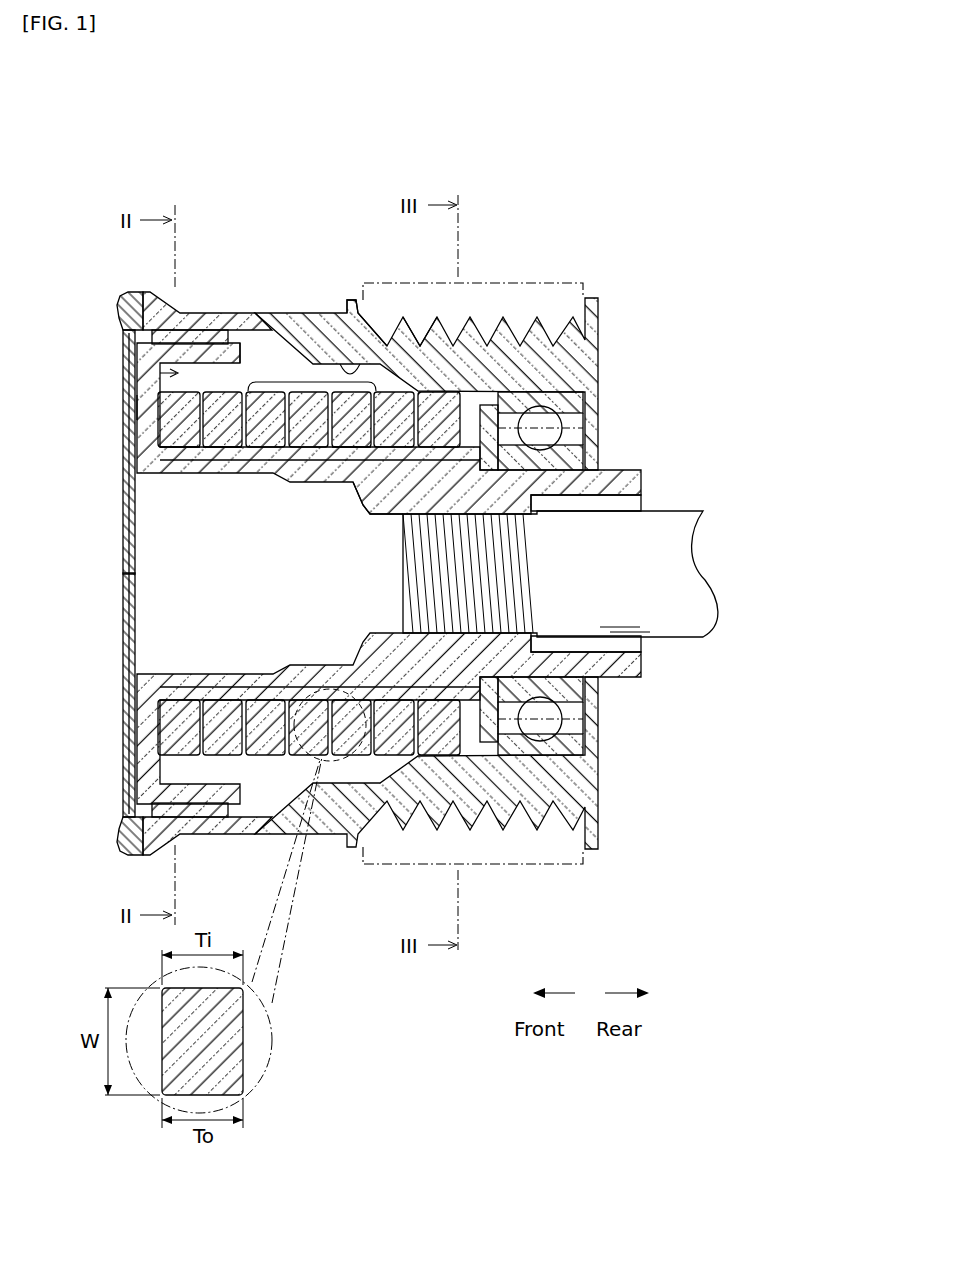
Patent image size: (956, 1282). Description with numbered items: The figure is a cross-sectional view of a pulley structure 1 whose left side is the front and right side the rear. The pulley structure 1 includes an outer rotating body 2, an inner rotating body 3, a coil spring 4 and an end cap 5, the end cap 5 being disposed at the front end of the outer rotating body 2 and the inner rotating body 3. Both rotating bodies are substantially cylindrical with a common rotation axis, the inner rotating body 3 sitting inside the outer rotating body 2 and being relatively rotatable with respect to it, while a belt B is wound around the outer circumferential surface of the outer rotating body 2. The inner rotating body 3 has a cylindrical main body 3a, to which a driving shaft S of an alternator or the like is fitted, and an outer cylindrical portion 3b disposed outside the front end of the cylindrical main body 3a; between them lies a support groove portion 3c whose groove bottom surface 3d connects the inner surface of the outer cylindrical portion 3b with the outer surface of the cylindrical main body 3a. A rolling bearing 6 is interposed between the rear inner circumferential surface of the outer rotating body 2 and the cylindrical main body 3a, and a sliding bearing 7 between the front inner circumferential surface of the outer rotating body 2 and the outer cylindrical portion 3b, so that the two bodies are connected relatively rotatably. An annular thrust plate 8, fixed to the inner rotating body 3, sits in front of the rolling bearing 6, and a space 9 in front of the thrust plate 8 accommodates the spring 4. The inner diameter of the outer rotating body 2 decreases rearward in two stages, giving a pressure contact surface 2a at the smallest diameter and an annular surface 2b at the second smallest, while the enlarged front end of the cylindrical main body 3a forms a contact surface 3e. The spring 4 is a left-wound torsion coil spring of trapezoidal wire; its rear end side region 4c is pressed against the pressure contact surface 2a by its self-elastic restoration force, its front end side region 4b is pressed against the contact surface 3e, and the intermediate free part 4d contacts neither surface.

The pulley structure 1 is at (637, 169).
The outer rotating body 2 is at (600, 331).
The pressure contact surface 2a is at (462, 402).
The annular surface 2b is at (372, 360).
The inner rotating body 3 is at (643, 476).
The cylindrical main body 3a is at (360, 498).
The outer cylindrical portion 3b is at (238, 333).
The support groove portion 3c is at (158, 373).
The groove bottom surface 3d is at (136, 406).
The contact surface 3e is at (186, 474).
The coil spring 4 is at (262, 474).
The front end side region 4b is at (214, 474).
The rear end side region 4c is at (350, 486).
The free part 4d is at (305, 380).
The end cap 5 is at (121, 560).
The rolling bearing 6 is at (588, 398).
The sliding bearing 7 is at (205, 312).
The thrust plate 8 is at (562, 428).
The space 9 is at (215, 356).
The belt B is at (487, 281).
The driving shaft S is at (665, 624).